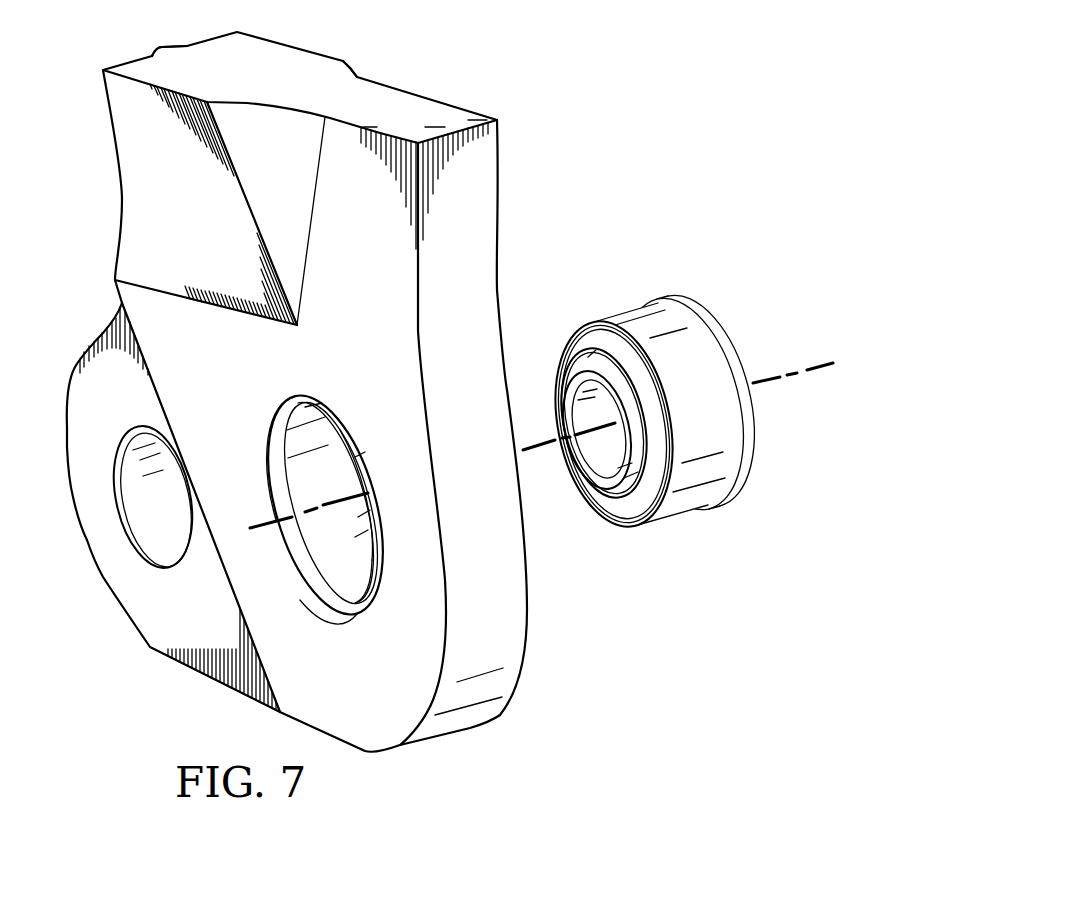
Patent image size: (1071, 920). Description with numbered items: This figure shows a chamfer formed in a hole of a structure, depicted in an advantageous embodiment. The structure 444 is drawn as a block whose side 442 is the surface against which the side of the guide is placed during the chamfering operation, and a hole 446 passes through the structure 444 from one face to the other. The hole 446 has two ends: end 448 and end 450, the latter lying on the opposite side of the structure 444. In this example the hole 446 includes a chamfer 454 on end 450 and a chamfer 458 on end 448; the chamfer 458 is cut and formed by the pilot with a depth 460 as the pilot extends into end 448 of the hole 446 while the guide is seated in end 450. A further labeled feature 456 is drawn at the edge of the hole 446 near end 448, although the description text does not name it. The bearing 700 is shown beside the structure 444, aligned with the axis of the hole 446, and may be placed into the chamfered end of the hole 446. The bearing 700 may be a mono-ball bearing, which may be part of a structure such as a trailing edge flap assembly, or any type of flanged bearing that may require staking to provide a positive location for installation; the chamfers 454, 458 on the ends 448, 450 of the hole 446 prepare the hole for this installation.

The side 442 is at (282, 123).
The structure 444 is at (245, 82).
The hole 446 is at (362, 580).
The end 448 is at (353, 470).
The end 450 is at (282, 418).
The chamfer 454 is at (347, 612).
The counterbore 456 is at (298, 400).
The chamfer 458 is at (365, 515).
The depth 460 is at (367, 537).
The bearing 700 is at (627, 313).